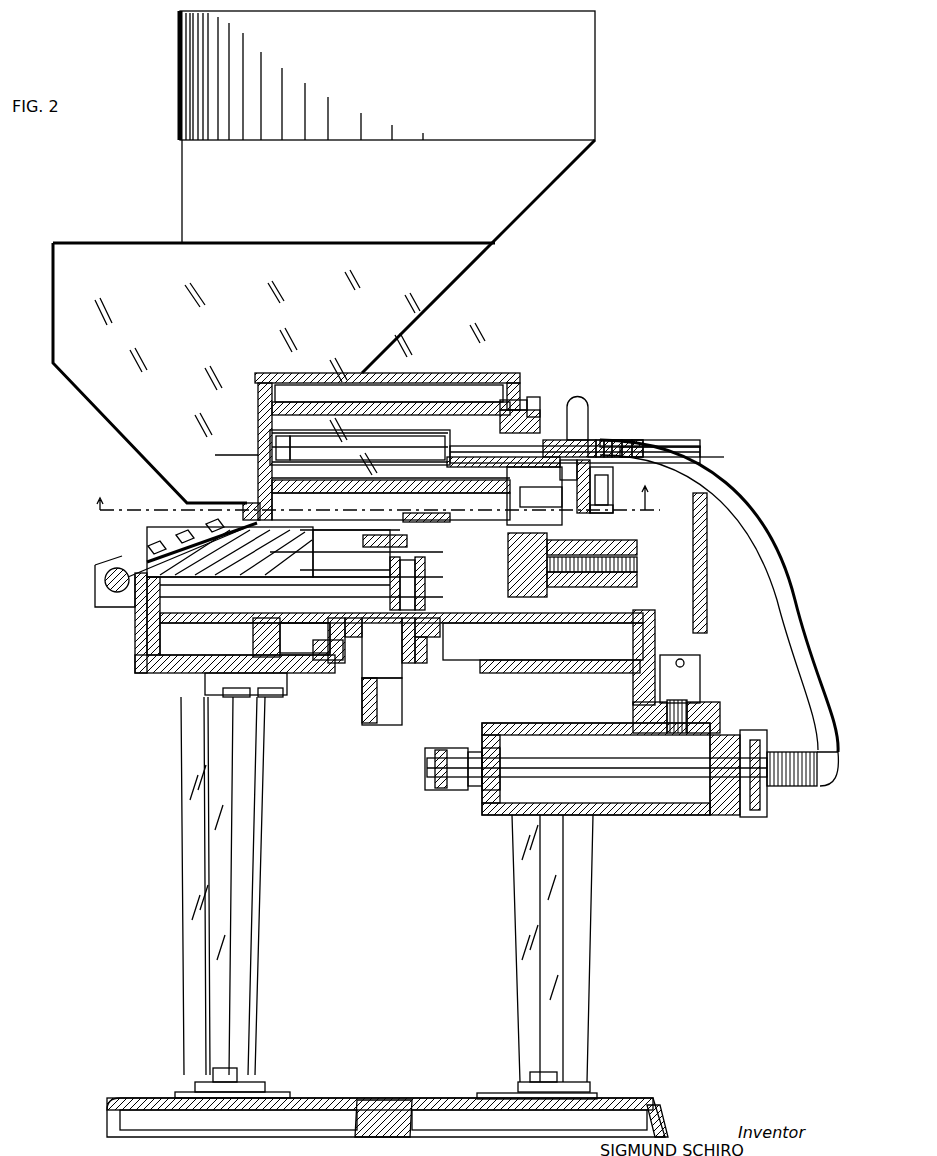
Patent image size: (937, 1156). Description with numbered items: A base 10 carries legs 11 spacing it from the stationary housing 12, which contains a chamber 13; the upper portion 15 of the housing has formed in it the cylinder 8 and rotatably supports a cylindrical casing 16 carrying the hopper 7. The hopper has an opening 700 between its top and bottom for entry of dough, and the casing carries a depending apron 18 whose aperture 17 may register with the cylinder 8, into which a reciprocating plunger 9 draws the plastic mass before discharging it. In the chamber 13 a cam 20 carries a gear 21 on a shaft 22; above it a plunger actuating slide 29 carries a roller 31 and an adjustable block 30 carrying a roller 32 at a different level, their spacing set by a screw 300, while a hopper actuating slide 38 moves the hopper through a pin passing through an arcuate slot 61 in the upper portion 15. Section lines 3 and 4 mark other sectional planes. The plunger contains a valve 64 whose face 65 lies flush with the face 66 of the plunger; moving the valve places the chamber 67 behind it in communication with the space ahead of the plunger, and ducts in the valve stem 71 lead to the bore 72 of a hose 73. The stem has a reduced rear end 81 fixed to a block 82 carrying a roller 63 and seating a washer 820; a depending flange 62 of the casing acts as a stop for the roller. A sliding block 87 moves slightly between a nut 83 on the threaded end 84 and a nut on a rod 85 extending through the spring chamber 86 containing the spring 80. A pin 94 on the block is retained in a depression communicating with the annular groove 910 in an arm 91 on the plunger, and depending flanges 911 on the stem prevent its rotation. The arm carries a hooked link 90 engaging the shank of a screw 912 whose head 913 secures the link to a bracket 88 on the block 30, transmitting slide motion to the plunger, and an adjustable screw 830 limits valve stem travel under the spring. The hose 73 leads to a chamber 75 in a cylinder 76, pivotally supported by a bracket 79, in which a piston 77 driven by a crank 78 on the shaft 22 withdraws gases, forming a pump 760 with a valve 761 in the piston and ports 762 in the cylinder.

The opening 700 is at (120, 243).
The hopper 7 is at (90, 266).
The cylinder 8 is at (292, 402).
The depending apron 18 is at (262, 392).
The aperture 17 is at (262, 400).
The reciprocating plunger 9 is at (405, 450).
The valve stem 71 is at (400, 440).
The chamber 67 is at (297, 433).
The washer 820 is at (457, 458).
The valve 64 is at (258, 433).
The face of the valve 65 is at (258, 448).
The face of the plunger 66 is at (258, 480).
The hopper actuating slide 38 is at (335, 539).
The depending flanges 911 is at (538, 497).
The section line 4 is at (465, 456).
The section line 3 is at (367, 507).
The cylindrical casing 16 is at (533, 397).
The reduced rear end of the valve stem 81 is at (512, 400).
The depending flange 62 is at (535, 420).
The roller 63 is at (560, 430).
The adjustable screw 830 is at (565, 447).
The block 82 is at (590, 440).
The nut 83 is at (600, 440).
The threaded end of the valve stem 84 is at (608, 440).
The spring 80 is at (618, 440).
The rod 85 is at (626, 440).
The sliding block 87 is at (636, 440).
The spring chamber 86 is at (600, 470).
The pin 94 is at (610, 480).
The arm 91 is at (612, 490).
The annular groove 910 is at (614, 495).
The hooked link 90 is at (620, 500).
The screw 912 is at (640, 505).
The head of the screw 913 is at (612, 520).
The bracket 88 is at (620, 515).
The hose 73 is at (784, 574).
The screw 300 is at (700, 562).
The block 30 is at (700, 596).
The roller 32 is at (650, 618).
The arcuate slot 61 is at (295, 562).
The upper portion of the housing 15 is at (155, 553).
The housing 12 is at (145, 625).
The chamber 13 is at (155, 633).
The gear 21 is at (245, 632).
The cam 20 is at (300, 628).
The plunger actuating slide 29 is at (340, 628).
The roller 31 is at (365, 628).
The shaft 22 is at (380, 728).
The legs 11 is at (252, 990).
The base 10 is at (660, 1112).
The cylinder 76 is at (655, 815).
The piston 77 is at (725, 812).
The crank 78 is at (440, 792).
The pump 760 is at (495, 790).
The ports 762 is at (480, 792).
The bracket 79 is at (718, 700).
The chamber 75 is at (760, 818).
The valve 761 is at (740, 818).
The bore 72 is at (826, 788).